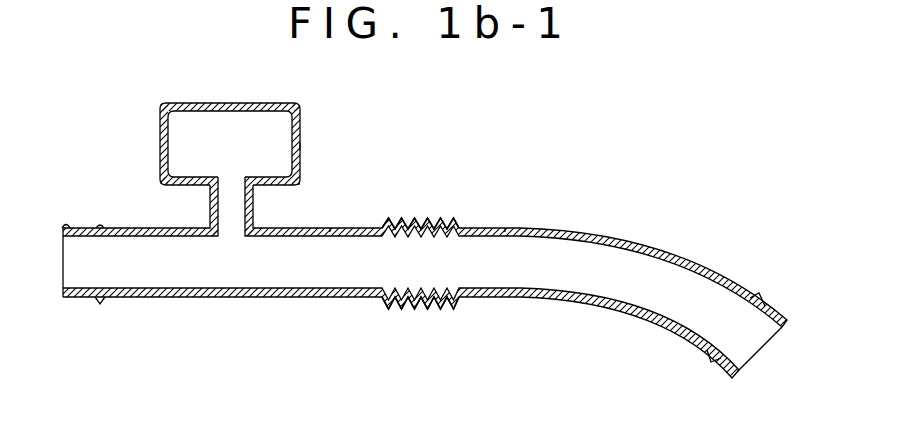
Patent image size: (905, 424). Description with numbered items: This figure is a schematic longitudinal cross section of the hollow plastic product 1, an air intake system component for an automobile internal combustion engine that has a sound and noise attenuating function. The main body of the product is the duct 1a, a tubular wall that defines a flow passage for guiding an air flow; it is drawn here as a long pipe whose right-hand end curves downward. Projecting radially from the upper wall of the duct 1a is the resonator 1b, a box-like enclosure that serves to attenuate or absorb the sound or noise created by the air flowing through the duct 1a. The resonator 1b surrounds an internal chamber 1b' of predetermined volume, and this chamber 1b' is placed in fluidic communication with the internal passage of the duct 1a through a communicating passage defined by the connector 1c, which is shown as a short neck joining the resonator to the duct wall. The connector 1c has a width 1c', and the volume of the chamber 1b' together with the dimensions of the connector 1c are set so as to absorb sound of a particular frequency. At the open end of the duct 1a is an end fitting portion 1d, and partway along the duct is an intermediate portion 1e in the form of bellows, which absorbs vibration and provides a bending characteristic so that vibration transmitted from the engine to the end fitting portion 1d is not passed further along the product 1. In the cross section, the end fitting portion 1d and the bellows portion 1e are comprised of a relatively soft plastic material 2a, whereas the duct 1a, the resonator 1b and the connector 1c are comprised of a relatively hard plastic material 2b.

The hollow plastic product 1 is at (232, 270).
The duct 1a is at (332, 298).
The resonator 1b is at (202, 133).
The internal chamber 1b' is at (263, 140).
The connector 1c is at (140, 206).
The width of the connector 1c' is at (750, 300).
The end fitting portion 1d is at (78, 227).
The intermediate bellows portion 1e is at (432, 220).
The relatively soft plastic material 2a is at (100, 297).
The relatively hard plastic material 2b is at (300, 143).